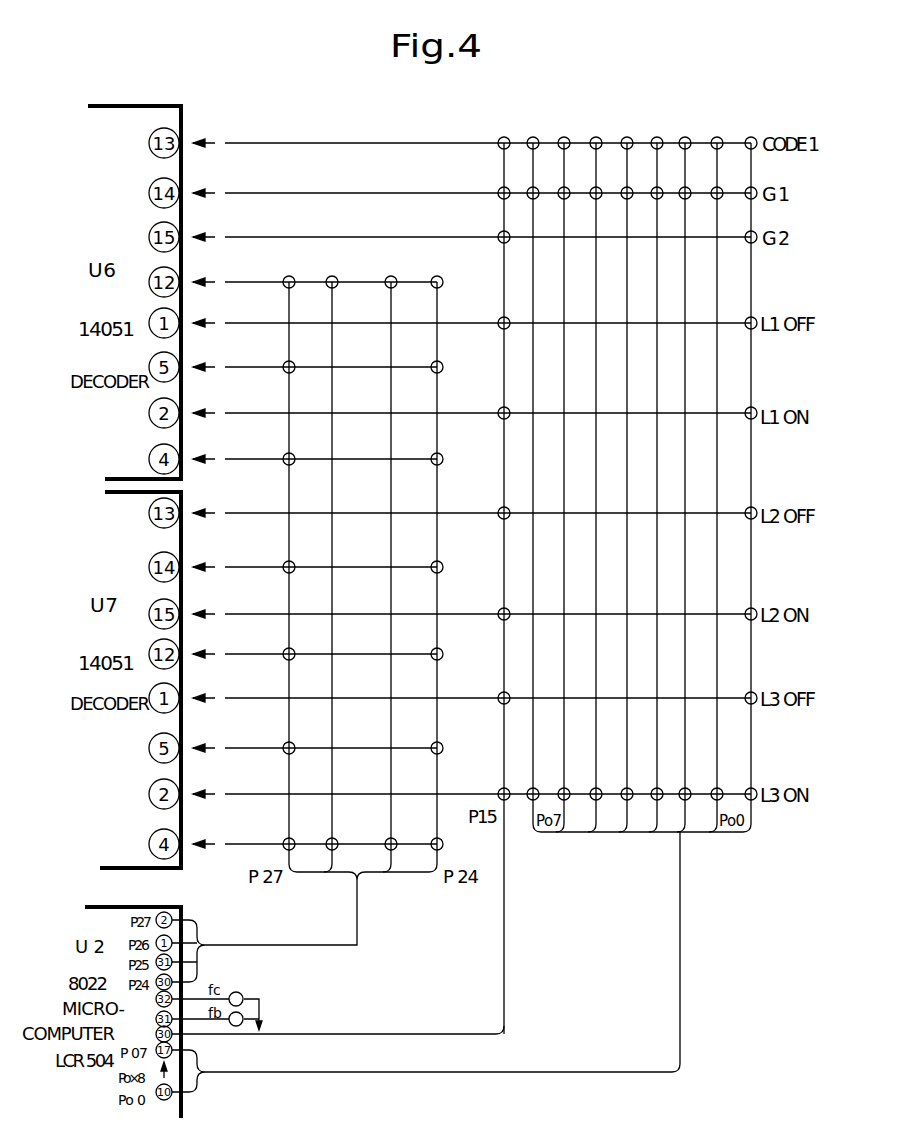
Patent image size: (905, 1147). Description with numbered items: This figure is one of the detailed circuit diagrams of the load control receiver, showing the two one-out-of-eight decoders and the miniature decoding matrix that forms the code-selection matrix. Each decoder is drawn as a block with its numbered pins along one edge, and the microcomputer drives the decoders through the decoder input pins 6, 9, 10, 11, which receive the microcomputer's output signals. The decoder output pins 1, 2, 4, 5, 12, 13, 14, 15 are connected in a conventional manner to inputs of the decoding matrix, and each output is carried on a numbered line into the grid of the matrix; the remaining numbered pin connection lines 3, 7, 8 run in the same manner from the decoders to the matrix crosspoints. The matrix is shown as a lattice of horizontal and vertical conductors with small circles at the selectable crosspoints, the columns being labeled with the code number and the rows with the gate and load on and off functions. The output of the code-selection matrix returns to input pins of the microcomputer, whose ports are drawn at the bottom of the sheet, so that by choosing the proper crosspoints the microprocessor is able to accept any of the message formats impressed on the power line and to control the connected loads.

The decoder output pin 1 is at (750, 471).
The decoder output pin 2 is at (716, 471).
The pin connection line 3 is at (458, 471).
The decoder output pin 4 is at (491, 471).
The decoder output pin 5 is at (429, 471).
The decoder input pin 6 is at (491, 471).
The pin connection line 7 is at (397, 471).
The pin connection line 8 is at (491, 471).
The decoder input pin 9 is at (367, 572).
The decoder input pin 10 is at (491, 604).
The decoder input pin 11 is at (334, 644).
The decoder output pin 12 is at (491, 688).
The decoder output pin 13 is at (334, 738).
The decoder output pin 14 is at (491, 784).
The decoder output pin 15 is at (334, 834).